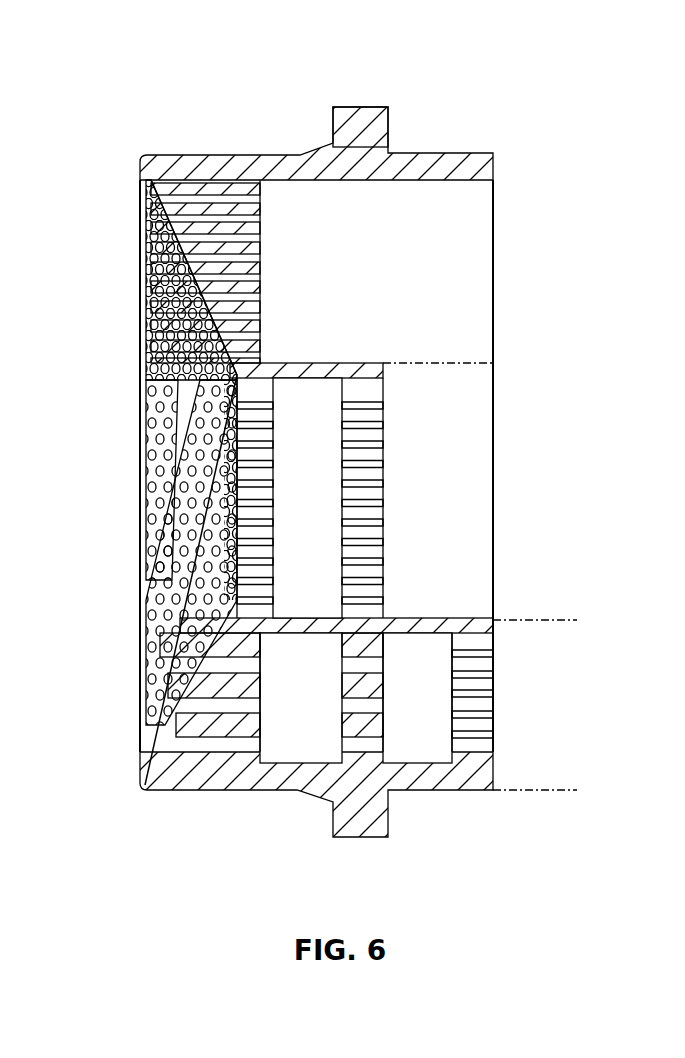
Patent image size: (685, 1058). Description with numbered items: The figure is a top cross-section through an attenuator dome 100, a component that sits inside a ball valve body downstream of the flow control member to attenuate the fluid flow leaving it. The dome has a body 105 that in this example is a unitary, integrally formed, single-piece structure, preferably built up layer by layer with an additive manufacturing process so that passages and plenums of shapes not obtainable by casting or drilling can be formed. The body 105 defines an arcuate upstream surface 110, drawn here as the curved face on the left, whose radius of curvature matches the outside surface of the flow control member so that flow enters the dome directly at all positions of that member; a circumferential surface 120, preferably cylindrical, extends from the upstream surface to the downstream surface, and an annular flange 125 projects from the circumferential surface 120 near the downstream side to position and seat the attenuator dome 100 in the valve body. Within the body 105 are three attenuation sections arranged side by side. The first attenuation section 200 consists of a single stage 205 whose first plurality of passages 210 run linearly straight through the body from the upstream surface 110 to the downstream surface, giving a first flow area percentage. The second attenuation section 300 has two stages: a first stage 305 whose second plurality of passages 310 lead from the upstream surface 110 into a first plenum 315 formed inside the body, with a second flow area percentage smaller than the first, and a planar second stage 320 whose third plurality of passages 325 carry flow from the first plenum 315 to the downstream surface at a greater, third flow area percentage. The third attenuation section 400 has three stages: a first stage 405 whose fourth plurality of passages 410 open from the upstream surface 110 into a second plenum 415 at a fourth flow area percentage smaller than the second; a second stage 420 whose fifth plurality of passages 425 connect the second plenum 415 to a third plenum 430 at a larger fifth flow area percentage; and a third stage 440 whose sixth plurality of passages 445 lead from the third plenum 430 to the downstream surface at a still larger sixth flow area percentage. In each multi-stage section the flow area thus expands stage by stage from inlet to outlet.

The attenuator dome 100 is at (137, 99).
The body 105 is at (262, 780).
The upstream surface 110 is at (226, 375).
The circumferential surface 120 is at (220, 157).
The annular flange 125 is at (365, 125).
The first attenuation section 200 is at (355, 183).
The single stage 205 is at (266, 247).
The first plurality of passages 210 is at (248, 276).
The second attenuation section 300 is at (457, 617).
The first stage of second attenuation section 305 is at (278, 462).
The second plurality of passages 310 is at (258, 534).
The first plenum 315 is at (332, 428).
The second stage of second attenuation section 320 is at (398, 444).
The third plurality of passages 325 is at (366, 512).
The third attenuation section 400 is at (568, 620).
The first stage of third attenuation section 405 is at (272, 690).
The fourth plurality of passages 410 is at (250, 705).
The second plenum 415 is at (327, 672).
The second stage of third attenuation section 420 is at (394, 690).
The fifth plurality of passages 425 is at (372, 705).
The third plenum 430 is at (444, 672).
The third stage of third attenuation section 440 is at (508, 676).
The sixth plurality of passages 445 is at (482, 705).